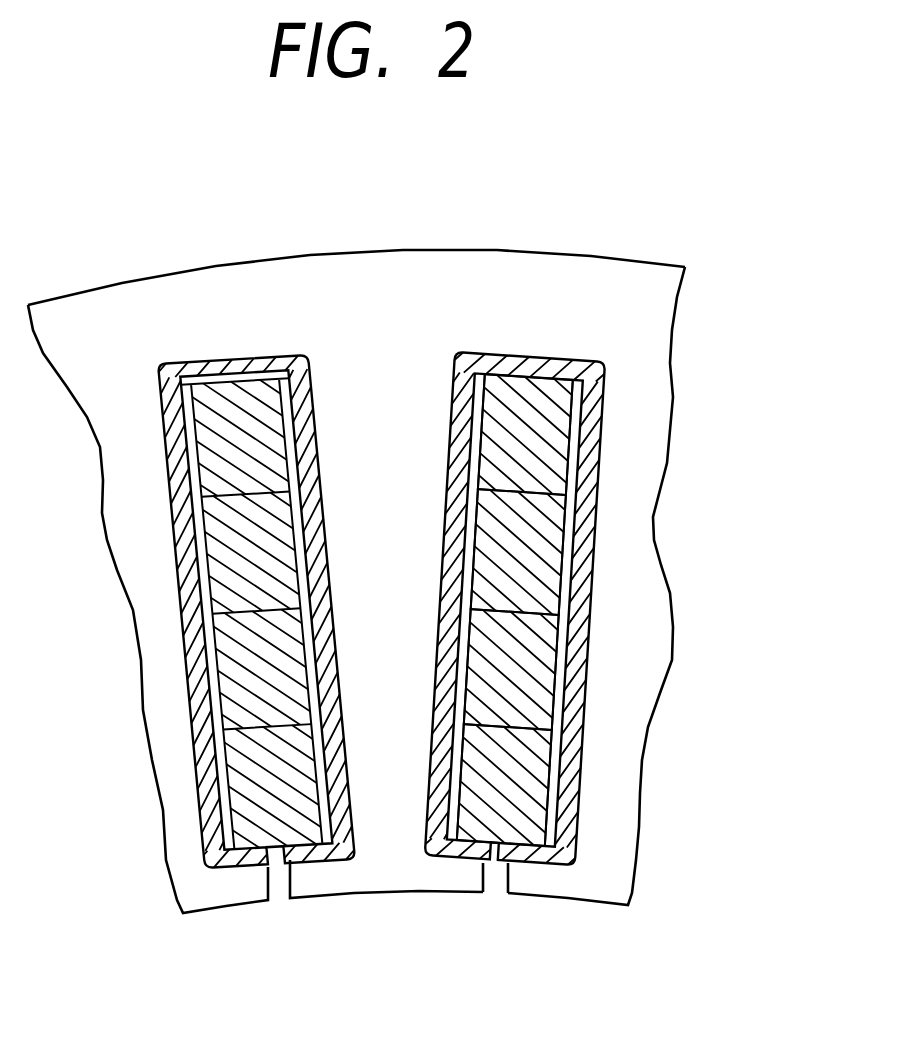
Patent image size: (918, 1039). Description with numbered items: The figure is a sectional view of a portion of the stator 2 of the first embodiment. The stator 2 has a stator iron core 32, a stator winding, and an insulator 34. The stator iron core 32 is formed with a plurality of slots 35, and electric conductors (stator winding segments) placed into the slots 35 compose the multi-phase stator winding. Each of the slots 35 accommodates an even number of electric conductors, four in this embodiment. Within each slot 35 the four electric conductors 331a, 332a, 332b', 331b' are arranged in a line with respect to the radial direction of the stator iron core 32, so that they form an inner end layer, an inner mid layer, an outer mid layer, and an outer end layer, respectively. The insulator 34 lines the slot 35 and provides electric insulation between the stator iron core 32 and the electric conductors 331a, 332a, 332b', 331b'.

The stator 2 is at (664, 227).
The stator iron core 32 is at (475, 272).
The insulator 34 is at (593, 360).
The slot 35 is at (493, 866).
The electric conductor 331a is at (533, 773).
The electric conductor 332a is at (547, 653).
The electric conductor 331b' is at (639, 434).
The electric conductor 332b' is at (635, 552).